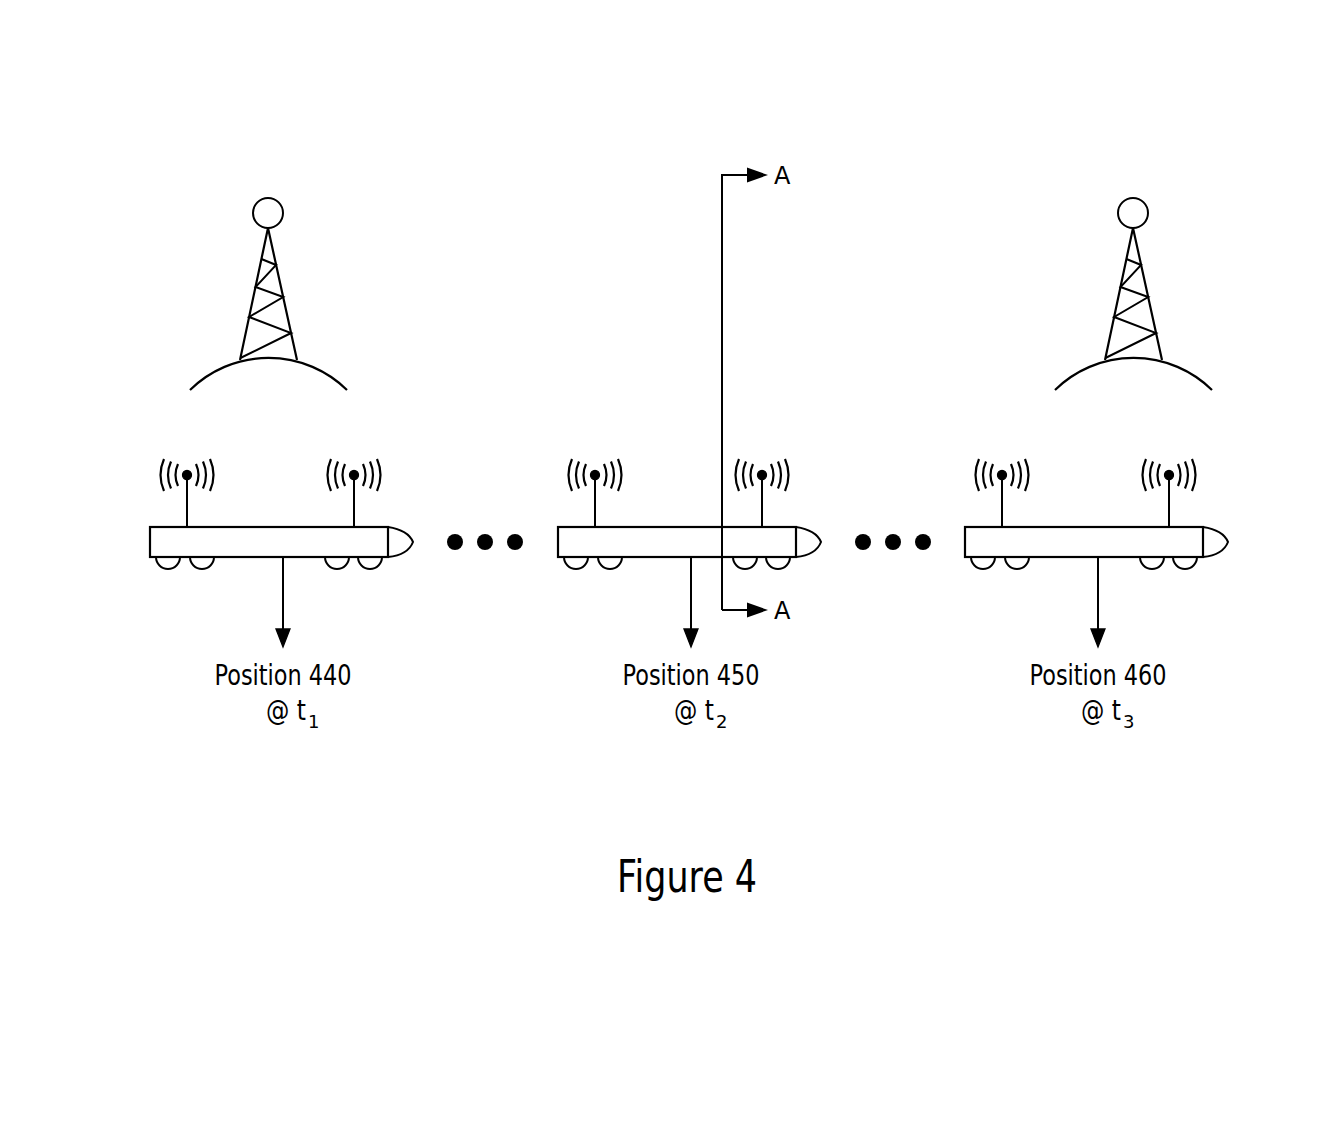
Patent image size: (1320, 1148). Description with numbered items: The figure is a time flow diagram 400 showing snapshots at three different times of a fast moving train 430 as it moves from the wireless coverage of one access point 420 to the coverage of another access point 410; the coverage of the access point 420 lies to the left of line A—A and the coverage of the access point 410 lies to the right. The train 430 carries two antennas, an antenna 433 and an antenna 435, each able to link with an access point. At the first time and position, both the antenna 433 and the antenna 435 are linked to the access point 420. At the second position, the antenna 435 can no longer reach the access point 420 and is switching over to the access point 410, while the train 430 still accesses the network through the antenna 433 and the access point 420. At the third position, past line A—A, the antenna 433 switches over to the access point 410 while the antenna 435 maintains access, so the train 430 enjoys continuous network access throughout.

The time flow diagram 400 is at (1230, 106).
The access point 410 is at (1140, 194).
The access point 420 is at (277, 194).
The fast moving train 430 is at (143, 552).
The antenna 433 is at (188, 458).
The antenna 435 is at (355, 458).